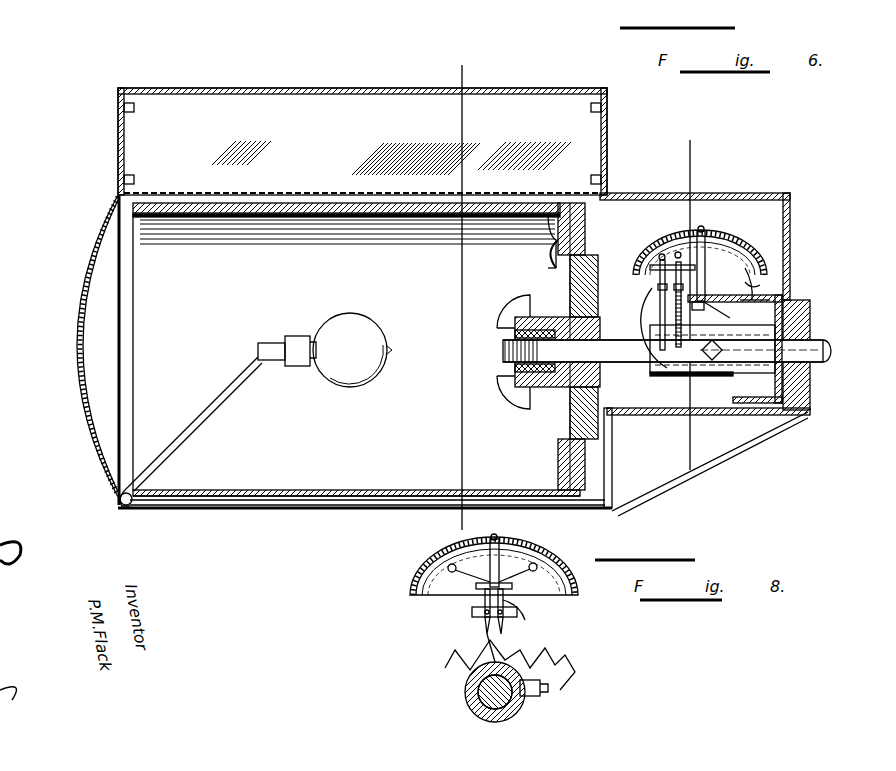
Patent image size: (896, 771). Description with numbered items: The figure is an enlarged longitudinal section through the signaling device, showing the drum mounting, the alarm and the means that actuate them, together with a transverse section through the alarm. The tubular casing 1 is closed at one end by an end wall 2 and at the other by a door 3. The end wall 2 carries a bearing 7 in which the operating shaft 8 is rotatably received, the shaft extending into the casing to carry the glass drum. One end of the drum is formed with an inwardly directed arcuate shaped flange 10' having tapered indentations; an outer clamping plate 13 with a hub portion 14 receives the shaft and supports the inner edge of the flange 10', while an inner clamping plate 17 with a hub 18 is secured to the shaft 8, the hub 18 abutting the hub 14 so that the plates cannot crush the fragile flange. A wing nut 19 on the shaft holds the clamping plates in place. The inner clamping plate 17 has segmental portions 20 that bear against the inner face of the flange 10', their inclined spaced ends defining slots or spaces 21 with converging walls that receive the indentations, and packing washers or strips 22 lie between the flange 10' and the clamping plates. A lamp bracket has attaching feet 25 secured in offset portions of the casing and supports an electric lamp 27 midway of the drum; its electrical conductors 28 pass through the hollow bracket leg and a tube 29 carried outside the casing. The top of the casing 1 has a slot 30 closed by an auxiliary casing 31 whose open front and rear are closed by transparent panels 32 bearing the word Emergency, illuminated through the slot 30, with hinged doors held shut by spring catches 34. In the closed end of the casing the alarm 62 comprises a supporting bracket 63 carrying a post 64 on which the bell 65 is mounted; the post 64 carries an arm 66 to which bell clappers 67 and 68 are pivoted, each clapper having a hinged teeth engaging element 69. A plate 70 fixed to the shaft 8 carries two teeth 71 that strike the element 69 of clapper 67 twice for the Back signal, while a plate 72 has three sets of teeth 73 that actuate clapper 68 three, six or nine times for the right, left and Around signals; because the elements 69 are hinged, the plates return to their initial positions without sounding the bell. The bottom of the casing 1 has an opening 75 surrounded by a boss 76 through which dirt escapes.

In FIG. 6, the tubular casing 1 is at (127, 347).
In FIG. 6, the end wall 2 is at (793, 210).
In FIG. 6, the door 3 is at (78, 309).
In FIG. 6, the bearing 7 is at (459, 77).
In FIG. 6, the operating shaft 8 is at (503, 353).
In FIG. 8, the operating shaft 8 is at (477, 713).
In FIG. 6, the arcuate shaped flange 10' is at (572, 307).
In FIG. 6, the outer clamping plate 13 is at (686, 297).
In FIG. 6, the hub portion 14 is at (537, 393).
In FIG. 6, the inner clamping plate 17 is at (550, 269).
In FIG. 6, the hub 18 is at (515, 333).
In FIG. 6, the wing nut 19 is at (523, 387).
In FIG. 6, the segmental portions 20 is at (558, 250).
In FIG. 6, the slots or spaces 21 is at (562, 293).
In FIG. 6, the packing washers or strips 22 is at (618, 198).
In FIG. 6, the attaching feet 25 is at (225, 371).
In FIG. 6, the electric lamp 27 is at (350, 378).
In FIG. 6, the electrical conductors 28 is at (212, 412).
In FIG. 6, the tube 29 is at (323, 511).
In FIG. 6, the slot 30 is at (248, 197).
In FIG. 6, the auxiliary casing 31 is at (517, 88).
In FIG. 6, the transparent panels 32 is at (477, 102).
In FIG. 6, the spring catches 34 is at (747, 283).
In FIG. 6, the alarm 62 is at (723, 230).
In FIG. 8, the alarm 62 is at (545, 549).
In FIG. 6, the supporting bracket 63 is at (748, 290).
In FIG. 6, the post 64 is at (740, 248).
In FIG. 8, the post 64 is at (578, 574).
In FIG. 6, the bell 65 is at (707, 230).
In FIG. 8, the bell 65 is at (497, 537).
In FIG. 6, the arm 66 is at (650, 276).
In FIG. 8, the arm 66 is at (480, 593).
In FIG. 6, the bell clapper 67 is at (658, 256).
In FIG. 8, the bell clapper 67 is at (598, 632).
In FIG. 6, the bell clapper 68 is at (696, 230).
In FIG. 8, the bell clapper 68 is at (423, 575).
In FIG. 6, the teeth engaging elements 69 is at (695, 266).
In FIG. 8, the teeth engaging elements 69 is at (480, 620).
In FIG. 6, the plate 70 is at (667, 367).
In FIG. 8, the plate 70 is at (466, 660).
In FIG. 8, the teeth 71 is at (447, 653).
In FIG. 6, the plate 72 is at (697, 378).
In FIG. 8, the plate 72 is at (522, 663).
In FIG. 6, the sets of teeth 73 is at (690, 311).
In FIG. 8, the sets of teeth 73 is at (565, 618).
In FIG. 6, the opening 75 is at (152, 488).
In FIG. 6, the boss 76 is at (127, 513).